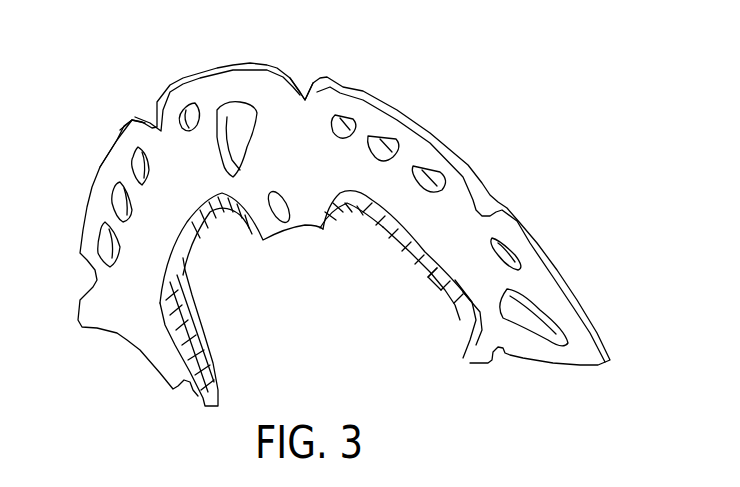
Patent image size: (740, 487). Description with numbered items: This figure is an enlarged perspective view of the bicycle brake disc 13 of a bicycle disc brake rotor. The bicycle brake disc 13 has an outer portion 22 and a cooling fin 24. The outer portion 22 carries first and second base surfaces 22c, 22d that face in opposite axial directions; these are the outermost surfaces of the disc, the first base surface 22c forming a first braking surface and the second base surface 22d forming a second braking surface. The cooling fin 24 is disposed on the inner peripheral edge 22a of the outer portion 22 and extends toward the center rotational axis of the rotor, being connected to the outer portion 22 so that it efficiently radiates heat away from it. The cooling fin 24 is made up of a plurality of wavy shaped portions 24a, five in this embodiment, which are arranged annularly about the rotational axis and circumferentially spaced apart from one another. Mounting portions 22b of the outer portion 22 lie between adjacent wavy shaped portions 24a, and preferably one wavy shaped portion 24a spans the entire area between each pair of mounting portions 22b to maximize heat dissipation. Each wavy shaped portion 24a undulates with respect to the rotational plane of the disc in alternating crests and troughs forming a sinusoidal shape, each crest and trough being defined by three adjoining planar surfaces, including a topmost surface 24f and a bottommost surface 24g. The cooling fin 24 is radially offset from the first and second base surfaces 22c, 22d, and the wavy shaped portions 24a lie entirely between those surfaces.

The bicycle brake disc 13 is at (480, 73).
The outer portion 22 is at (548, 252).
The inner peripheral edge 22a is at (420, 222).
The mounting portions 22b is at (300, 207).
The first base surface 22c is at (208, 95).
The second base surface 22d is at (292, 77).
The cooling fin 24 is at (374, 334).
The wavy shaped portions 24a is at (207, 305).
The topmost surface 24f is at (437, 290).
The bottommost surface 24g is at (463, 297).